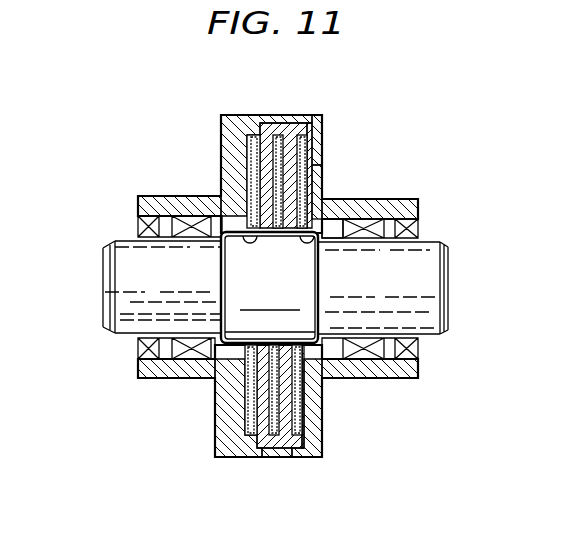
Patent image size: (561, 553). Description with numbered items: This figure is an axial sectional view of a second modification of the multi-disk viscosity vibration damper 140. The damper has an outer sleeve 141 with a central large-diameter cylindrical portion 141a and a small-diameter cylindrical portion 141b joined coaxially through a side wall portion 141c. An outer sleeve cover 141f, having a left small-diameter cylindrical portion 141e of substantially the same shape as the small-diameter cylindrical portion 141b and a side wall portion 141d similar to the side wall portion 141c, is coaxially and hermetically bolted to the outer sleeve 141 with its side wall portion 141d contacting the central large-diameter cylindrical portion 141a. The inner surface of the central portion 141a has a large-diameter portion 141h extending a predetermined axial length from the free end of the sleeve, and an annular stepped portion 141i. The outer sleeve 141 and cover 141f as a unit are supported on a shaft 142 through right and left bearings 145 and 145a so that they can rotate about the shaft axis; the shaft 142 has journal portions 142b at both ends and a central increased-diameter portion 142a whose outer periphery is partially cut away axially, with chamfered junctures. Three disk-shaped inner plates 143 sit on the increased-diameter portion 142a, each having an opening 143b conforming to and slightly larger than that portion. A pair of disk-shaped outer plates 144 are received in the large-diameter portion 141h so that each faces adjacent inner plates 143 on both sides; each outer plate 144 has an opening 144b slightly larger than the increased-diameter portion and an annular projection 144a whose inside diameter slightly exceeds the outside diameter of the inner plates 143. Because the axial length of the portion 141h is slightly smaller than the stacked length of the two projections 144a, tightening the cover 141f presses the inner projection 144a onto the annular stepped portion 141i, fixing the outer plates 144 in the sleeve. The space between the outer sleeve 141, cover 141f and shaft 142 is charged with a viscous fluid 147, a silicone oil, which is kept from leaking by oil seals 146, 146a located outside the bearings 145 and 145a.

The multi-disk viscosity vibration damper 140 is at (446, 110).
The outer sleeve 141 is at (228, 160).
The central large-diameter cylindrical portion 141a is at (295, 458).
The small-diameter cylindrical portion 141b is at (150, 203).
The side wall portion 141c is at (233, 178).
The side wall portion 141d is at (323, 140).
The left small-diameter cylindrical portion 141e is at (372, 204).
The outer sleeve cover 141f is at (319, 158).
The large-diameter portion 141h is at (274, 460).
The annular stepped portion 141i is at (247, 444).
The shaft 142 is at (446, 245).
The central increased-diameter portion 142a is at (237, 268).
The journal portions 142b is at (110, 331).
The inner plates 143 is at (250, 130).
The opening 143b is at (428, 246).
The outer plates 144 is at (263, 127).
The projection 144a is at (292, 123).
The opening 144b is at (243, 233).
The bearing 145 is at (362, 362).
The bearing 145a is at (188, 356).
The oil seal 146 is at (411, 352).
The oil seal 146a is at (150, 354).
The viscous fluid 147 is at (330, 226).